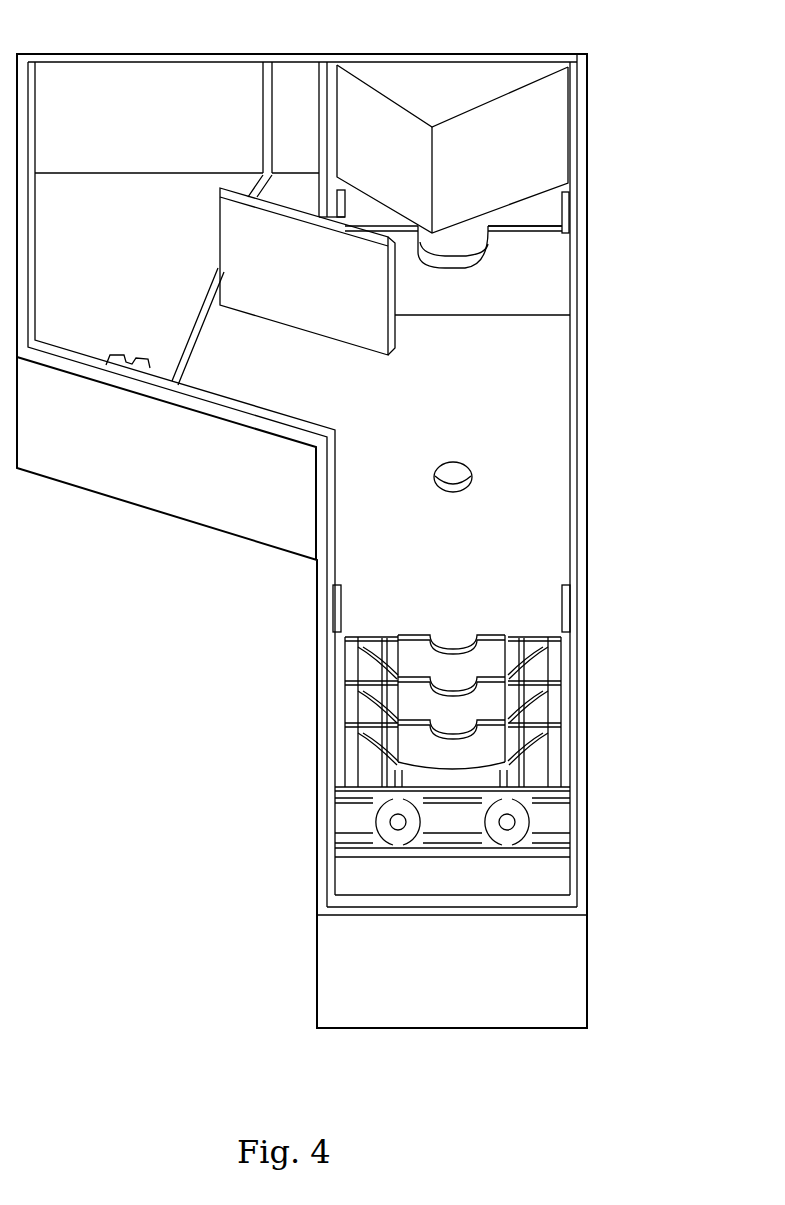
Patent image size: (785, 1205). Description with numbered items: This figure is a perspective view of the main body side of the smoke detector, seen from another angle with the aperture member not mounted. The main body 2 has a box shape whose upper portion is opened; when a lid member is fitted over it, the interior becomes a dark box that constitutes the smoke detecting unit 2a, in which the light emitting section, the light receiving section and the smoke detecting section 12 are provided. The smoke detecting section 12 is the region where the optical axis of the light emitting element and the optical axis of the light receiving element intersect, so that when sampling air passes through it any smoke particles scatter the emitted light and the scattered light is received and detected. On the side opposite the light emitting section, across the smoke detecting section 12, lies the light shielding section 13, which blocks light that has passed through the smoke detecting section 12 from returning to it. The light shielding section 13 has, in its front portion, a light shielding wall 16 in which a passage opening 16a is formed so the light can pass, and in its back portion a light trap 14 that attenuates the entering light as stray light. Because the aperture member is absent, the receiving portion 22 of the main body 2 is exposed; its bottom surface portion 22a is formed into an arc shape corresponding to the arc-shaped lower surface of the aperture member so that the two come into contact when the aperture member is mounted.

The main body 2 is at (587, 885).
The smoke detecting unit 2a is at (572, 550).
The smoke detecting section 12 is at (484, 476).
The light shielding section 13 is at (505, 215).
The light trap 14 is at (507, 140).
The light shielding wall 16 is at (530, 235).
The passage opening 16a is at (480, 265).
The receiving portion 22 is at (557, 631).
The bottom surface portion 22a is at (543, 673).